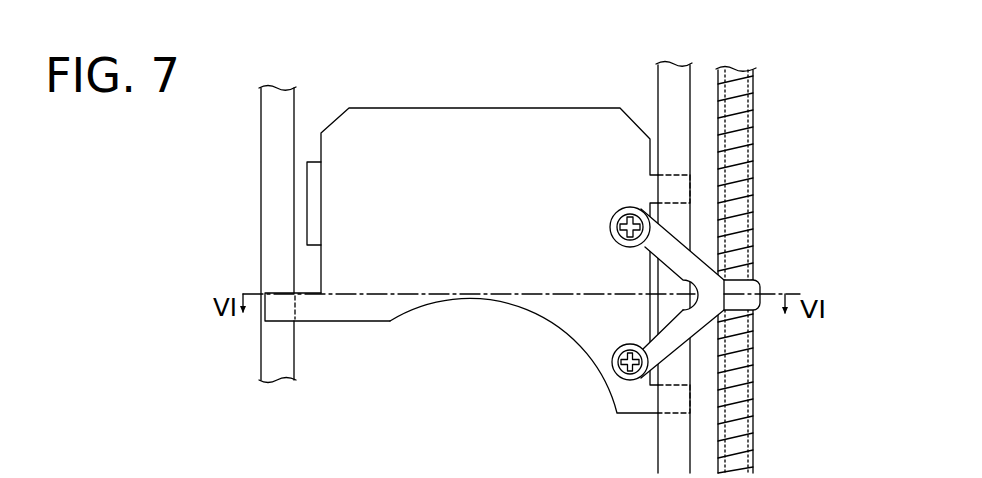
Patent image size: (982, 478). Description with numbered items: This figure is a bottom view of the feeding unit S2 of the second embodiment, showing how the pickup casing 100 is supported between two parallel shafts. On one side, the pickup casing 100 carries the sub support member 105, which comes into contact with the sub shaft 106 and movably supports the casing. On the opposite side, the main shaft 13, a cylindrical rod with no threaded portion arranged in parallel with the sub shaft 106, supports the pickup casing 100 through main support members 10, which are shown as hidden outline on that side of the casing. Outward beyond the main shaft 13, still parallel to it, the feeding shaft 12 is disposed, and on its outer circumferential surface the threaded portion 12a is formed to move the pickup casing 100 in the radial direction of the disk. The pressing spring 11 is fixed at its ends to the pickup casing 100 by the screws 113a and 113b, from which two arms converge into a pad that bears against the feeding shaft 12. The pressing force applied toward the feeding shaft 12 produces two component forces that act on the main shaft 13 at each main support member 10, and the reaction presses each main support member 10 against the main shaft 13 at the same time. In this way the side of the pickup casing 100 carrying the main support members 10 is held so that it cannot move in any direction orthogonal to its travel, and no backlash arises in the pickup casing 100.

The main support member 10 is at (690, 197).
The pressing spring 11 is at (758, 282).
The feeding shaft 12 is at (754, 74).
The threaded portion 12a is at (750, 133).
The main shaft 13 is at (668, 447).
The pickup casing 100 is at (462, 122).
The sub support member 105 is at (284, 318).
The sub shaft 106 is at (282, 95).
The screw 113a is at (618, 368).
The screw 113b is at (622, 216).
The feeding unit S2 is at (238, 396).